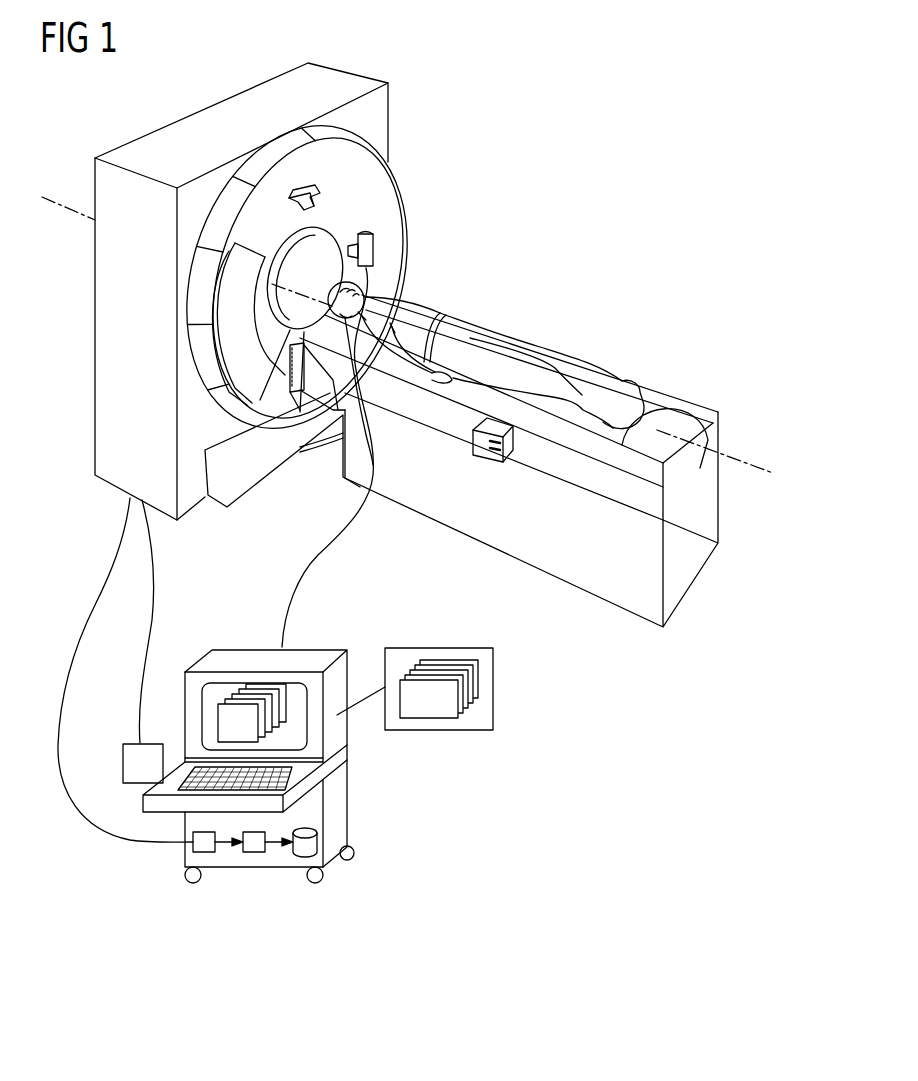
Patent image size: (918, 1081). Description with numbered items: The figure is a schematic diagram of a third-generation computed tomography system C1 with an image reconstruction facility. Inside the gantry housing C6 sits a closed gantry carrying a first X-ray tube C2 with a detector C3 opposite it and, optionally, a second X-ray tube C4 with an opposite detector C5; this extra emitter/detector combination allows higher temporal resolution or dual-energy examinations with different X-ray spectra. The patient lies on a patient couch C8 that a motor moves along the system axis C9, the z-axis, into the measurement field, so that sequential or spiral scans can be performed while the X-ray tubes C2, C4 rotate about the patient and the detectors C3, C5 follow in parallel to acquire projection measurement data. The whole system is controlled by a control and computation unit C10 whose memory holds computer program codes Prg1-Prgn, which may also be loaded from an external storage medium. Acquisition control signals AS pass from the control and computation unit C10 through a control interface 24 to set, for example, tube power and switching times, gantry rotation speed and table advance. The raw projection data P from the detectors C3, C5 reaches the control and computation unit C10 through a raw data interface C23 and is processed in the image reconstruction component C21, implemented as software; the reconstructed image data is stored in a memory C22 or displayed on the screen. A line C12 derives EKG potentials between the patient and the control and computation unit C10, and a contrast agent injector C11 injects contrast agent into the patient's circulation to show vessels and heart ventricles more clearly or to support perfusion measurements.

The computed tomography system C1 is at (566, 192).
The first X-ray tube C2 is at (378, 250).
The detector C3 is at (250, 373).
The second X-ray tube C4 is at (318, 199).
The detector C5 is at (305, 385).
The gantry housing C6 is at (122, 485).
The patient couch C8 is at (603, 592).
The system axis C9 is at (736, 457).
The control and computation unit C10 is at (343, 814).
The contrast agent injector C11 is at (494, 462).
The line C12 is at (309, 560).
The projection measurement data P is at (107, 578).
The acquisition control signals AS is at (150, 608).
The control interface 24 is at (123, 763).
The image reconstruction component C21 is at (256, 856).
The memory C22 is at (303, 856).
The raw data interface C23 is at (206, 853).
The computer program codes Prg1-Prgn is at (427, 718).